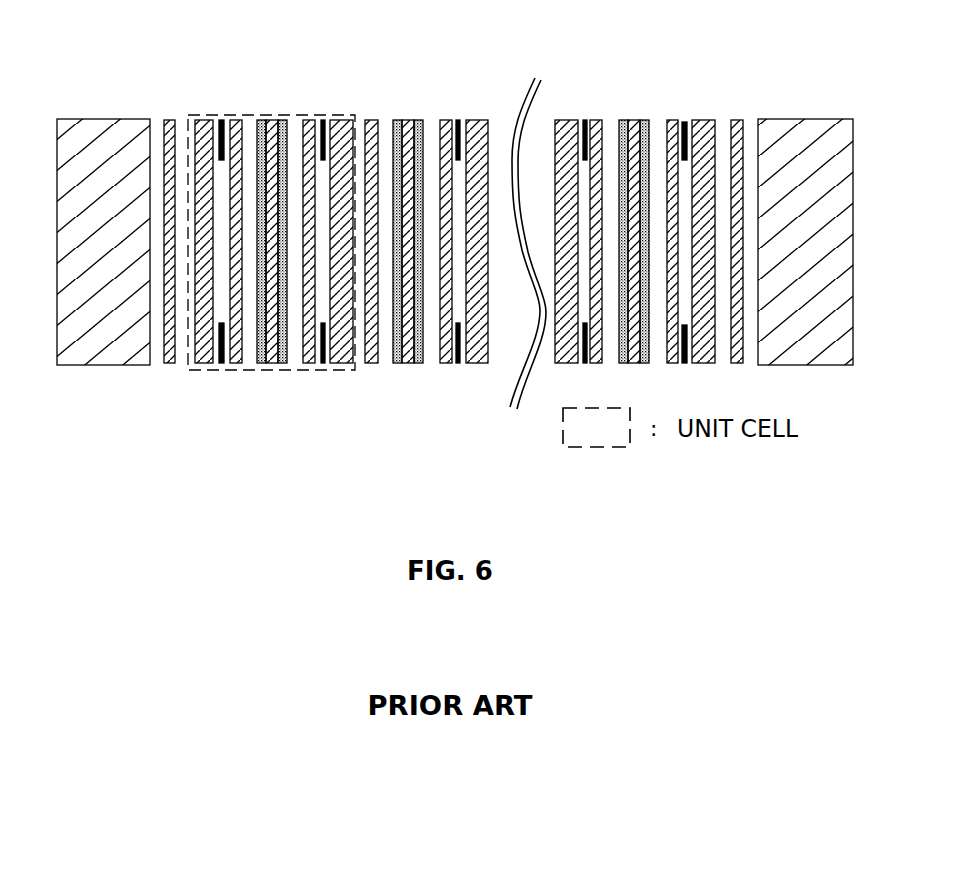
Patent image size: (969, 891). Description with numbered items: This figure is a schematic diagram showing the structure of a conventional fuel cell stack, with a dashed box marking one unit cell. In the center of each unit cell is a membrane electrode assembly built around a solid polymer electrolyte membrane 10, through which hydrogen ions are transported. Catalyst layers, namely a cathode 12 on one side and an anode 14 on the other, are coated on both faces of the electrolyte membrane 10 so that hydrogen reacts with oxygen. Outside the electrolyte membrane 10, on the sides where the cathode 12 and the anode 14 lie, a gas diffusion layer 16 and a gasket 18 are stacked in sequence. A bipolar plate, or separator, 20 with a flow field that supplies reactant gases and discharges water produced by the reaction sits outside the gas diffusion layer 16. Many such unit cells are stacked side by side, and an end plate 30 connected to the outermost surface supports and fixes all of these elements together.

The solid polymer electrolyte membrane 10 is at (288, 309).
The cathode 12 is at (318, 296).
The anode 14 is at (243, 309).
The gas diffusion layer 16 is at (295, 192).
The gasket 18 is at (288, 195).
The bipolar plate 20 is at (259, 302).
The end plate 30 is at (455, 195).